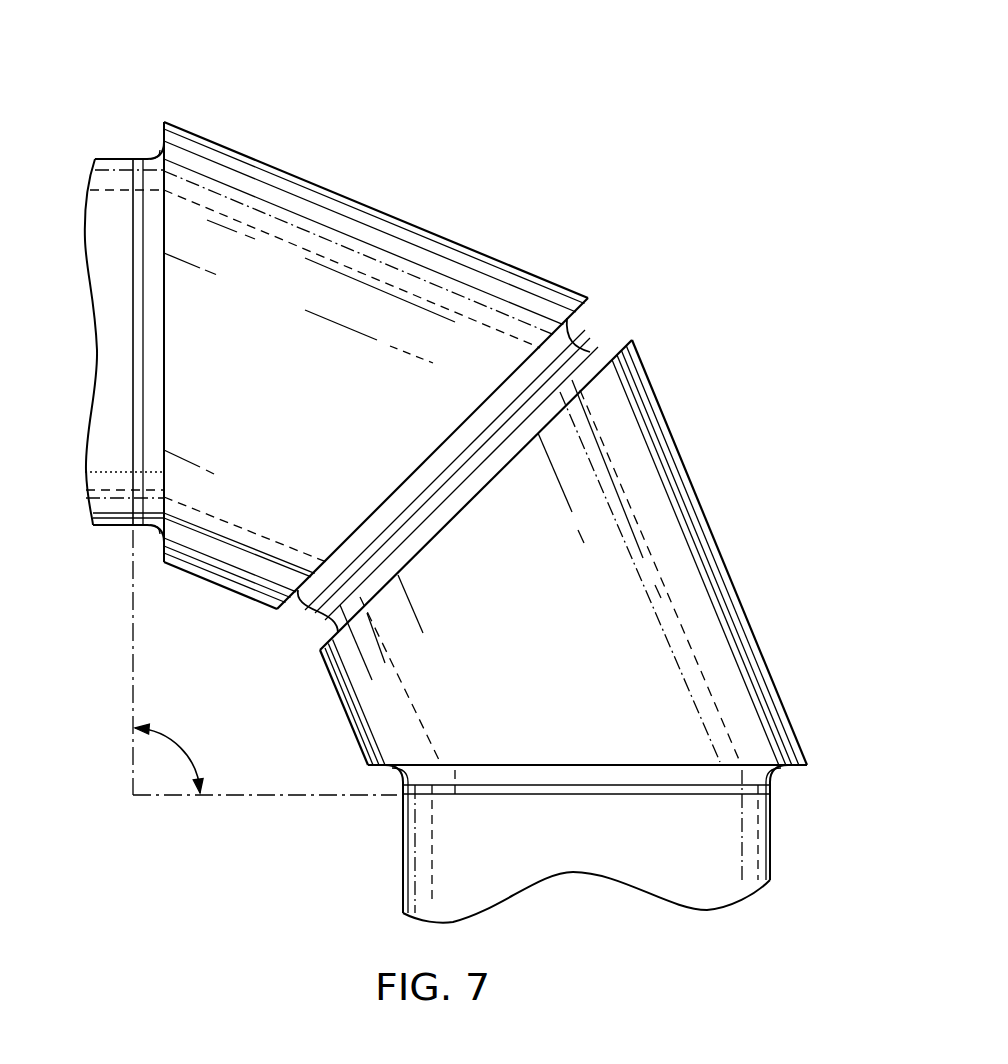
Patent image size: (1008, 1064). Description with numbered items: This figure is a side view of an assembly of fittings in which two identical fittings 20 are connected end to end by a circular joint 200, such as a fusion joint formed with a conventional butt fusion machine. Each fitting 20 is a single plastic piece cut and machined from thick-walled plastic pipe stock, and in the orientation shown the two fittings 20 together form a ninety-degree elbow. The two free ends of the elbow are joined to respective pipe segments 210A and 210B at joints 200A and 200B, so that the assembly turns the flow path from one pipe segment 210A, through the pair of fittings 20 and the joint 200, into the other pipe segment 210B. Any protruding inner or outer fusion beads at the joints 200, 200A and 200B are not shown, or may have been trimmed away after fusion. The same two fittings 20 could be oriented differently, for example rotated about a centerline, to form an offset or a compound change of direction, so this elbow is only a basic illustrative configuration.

The fitting 20 is at (400, 204).
The circular joint 200 is at (592, 350).
The joint 200A is at (133, 440).
The joint 200B is at (665, 794).
The pipe segment 210A is at (110, 145).
The pipe segment 210B is at (786, 841).